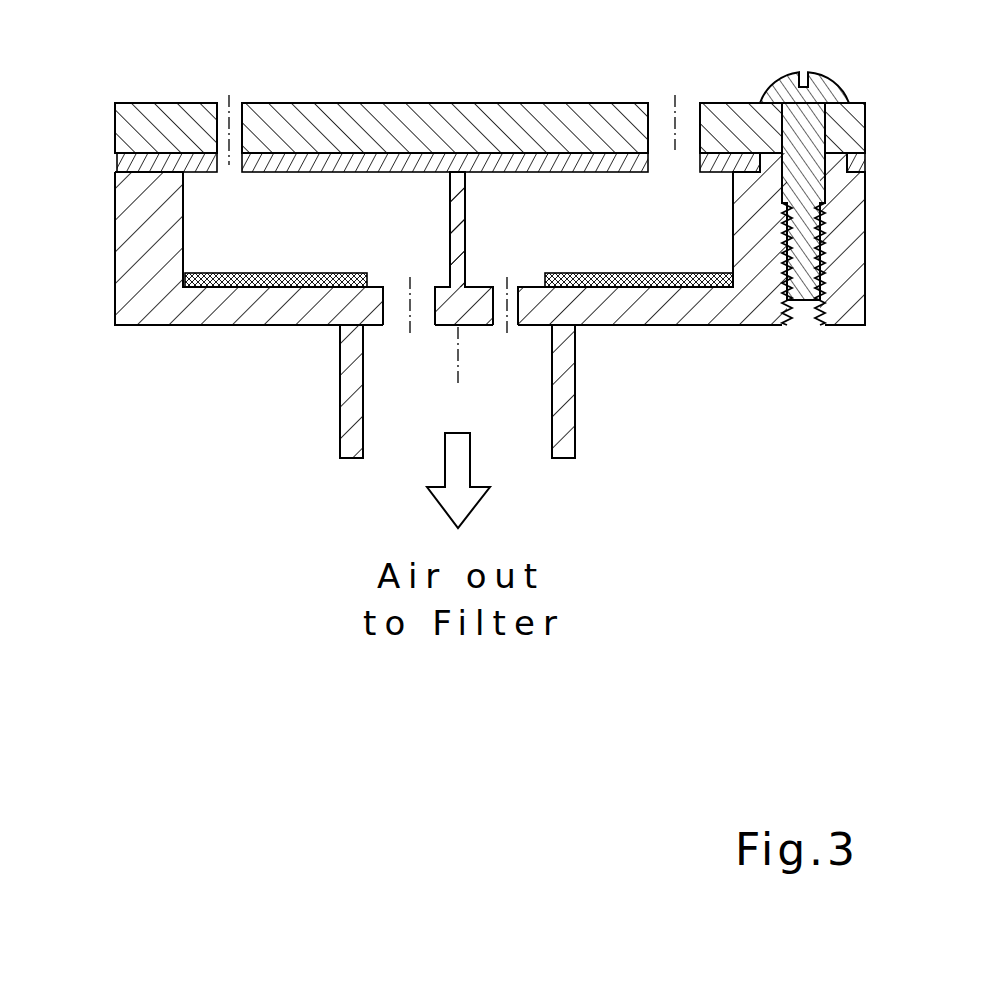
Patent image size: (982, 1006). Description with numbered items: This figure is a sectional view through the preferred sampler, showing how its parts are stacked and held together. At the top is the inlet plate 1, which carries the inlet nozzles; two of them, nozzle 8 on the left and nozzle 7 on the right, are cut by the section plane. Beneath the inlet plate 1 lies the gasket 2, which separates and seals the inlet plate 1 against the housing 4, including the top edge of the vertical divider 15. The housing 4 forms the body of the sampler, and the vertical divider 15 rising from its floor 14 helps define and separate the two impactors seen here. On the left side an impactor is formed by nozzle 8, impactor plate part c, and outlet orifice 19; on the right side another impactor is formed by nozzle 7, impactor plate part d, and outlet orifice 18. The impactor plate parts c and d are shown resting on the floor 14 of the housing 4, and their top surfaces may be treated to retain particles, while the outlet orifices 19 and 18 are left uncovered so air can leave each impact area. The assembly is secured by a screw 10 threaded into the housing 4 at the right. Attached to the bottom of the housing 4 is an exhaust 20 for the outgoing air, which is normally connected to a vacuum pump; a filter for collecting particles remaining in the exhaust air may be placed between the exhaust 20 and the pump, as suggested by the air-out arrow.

The inlet plate 1 is at (597, 120).
The gasket 2 is at (143, 165).
The housing 4 is at (130, 232).
The nozzle 7 is at (685, 123).
The nozzle 8 is at (230, 101).
The screw 10 is at (810, 67).
The floor 14 is at (757, 312).
The vertical divider 15 is at (462, 213).
The outlet orifice 18 is at (507, 326).
The outlet orifice 19 is at (397, 326).
The exhaust 20 is at (346, 455).
The impactor plate part c is at (233, 281).
The impactor plate part d is at (644, 283).